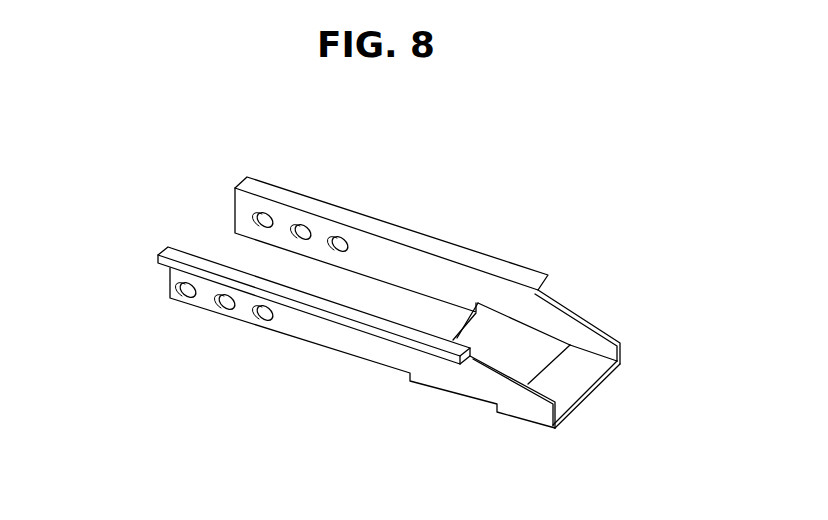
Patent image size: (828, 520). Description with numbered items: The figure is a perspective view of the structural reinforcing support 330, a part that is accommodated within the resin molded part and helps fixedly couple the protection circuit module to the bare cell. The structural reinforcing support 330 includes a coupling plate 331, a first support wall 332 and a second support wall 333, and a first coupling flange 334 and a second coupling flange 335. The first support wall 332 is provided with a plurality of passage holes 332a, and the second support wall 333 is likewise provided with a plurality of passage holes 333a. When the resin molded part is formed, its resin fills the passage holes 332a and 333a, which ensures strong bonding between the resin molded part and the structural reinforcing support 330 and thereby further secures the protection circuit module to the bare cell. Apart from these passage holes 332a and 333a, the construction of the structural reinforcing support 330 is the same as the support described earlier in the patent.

The structural reinforcing support 330 is at (473, 220).
The coupling plate 331 is at (573, 386).
The first support wall 332 is at (310, 333).
The passage holes 332a is at (261, 318).
The second support wall 333 is at (557, 320).
The passage holes 333a is at (335, 237).
The first coupling flange 334 is at (170, 251).
The second coupling flange 335 is at (260, 187).